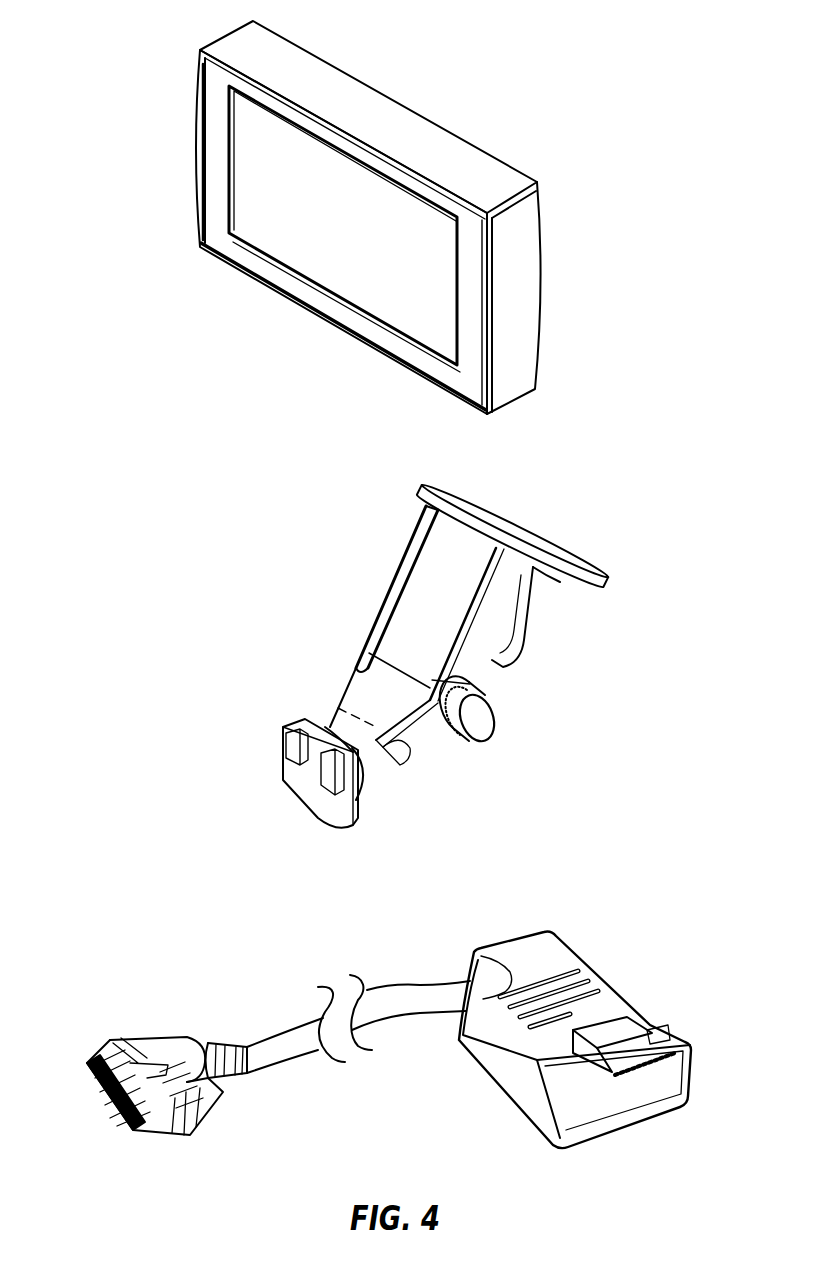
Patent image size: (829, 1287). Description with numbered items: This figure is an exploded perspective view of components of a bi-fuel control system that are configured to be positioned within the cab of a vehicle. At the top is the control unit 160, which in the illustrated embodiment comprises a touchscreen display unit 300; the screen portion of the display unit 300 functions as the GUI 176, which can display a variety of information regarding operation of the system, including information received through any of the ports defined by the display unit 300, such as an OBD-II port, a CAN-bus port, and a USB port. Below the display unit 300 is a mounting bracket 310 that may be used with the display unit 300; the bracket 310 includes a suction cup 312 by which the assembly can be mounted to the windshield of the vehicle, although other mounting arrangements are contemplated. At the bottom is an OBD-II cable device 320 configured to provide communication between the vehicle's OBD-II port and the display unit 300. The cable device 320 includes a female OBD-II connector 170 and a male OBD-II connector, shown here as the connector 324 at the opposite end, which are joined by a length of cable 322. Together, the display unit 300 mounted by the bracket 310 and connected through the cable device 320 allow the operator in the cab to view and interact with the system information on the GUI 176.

The control unit 160 is at (386, 214).
The touchscreen display unit 300 is at (198, 150).
The GUI 176 is at (352, 248).
The mounting bracket 310 is at (454, 654).
The suction cup 312 is at (523, 537).
The OBD-II cable device 320 is at (419, 995).
The cable 322 is at (288, 1045).
The display connector 324 is at (138, 1052).
The female OBD-II connector 170 is at (630, 1116).